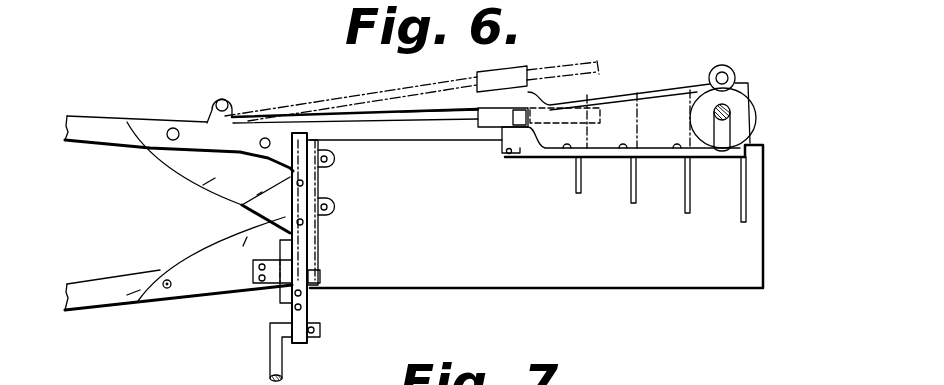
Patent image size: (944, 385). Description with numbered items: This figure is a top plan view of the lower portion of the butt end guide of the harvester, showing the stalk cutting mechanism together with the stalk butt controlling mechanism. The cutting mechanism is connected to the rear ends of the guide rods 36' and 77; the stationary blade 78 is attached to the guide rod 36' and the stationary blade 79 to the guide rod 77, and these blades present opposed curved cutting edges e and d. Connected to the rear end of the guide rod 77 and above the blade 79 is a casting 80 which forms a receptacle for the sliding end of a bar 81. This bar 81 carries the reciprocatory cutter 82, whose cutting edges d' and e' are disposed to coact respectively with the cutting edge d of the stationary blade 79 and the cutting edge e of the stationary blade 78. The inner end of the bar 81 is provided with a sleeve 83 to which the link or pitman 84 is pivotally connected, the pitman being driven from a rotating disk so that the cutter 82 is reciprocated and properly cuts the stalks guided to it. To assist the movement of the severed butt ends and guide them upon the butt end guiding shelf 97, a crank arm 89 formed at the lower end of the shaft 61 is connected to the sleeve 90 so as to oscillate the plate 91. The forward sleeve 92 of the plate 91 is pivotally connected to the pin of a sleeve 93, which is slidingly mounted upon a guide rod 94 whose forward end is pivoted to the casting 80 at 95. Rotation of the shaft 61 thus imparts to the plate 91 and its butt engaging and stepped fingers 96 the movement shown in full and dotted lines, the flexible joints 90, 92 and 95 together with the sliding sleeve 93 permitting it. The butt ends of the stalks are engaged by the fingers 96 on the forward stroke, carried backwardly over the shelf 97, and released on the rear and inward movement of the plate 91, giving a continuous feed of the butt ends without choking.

The guide rod 77 is at (90, 123).
The pivot 95 is at (230, 100).
The casting 80 is at (258, 122).
The stationary blade 79 is at (193, 157).
The cutting edge d is at (193, 204).
The cutting edge d' is at (255, 174).
The stationary blade 78 is at (227, 283).
The cutting edge e is at (211, 259).
The cutting edge e' is at (234, 255).
The guide rod 36' is at (123, 334).
The bar 81 is at (318, 160).
The reciprocatory cutter 82 is at (290, 205).
The sleeve 83 is at (302, 322).
The link or pitman 84 is at (268, 375).
The sleeve 93 is at (497, 110).
The guide rod 94 is at (457, 118).
The forward sleeve 92 is at (512, 137).
The crank arm 89 is at (727, 123).
The shaft 61 is at (723, 113).
The sleeve 90 is at (750, 140).
The butt engaging and stepped fingers 96 is at (600, 217).
The plate 91 is at (688, 150).
The butt end guiding shelf 97 is at (518, 273).